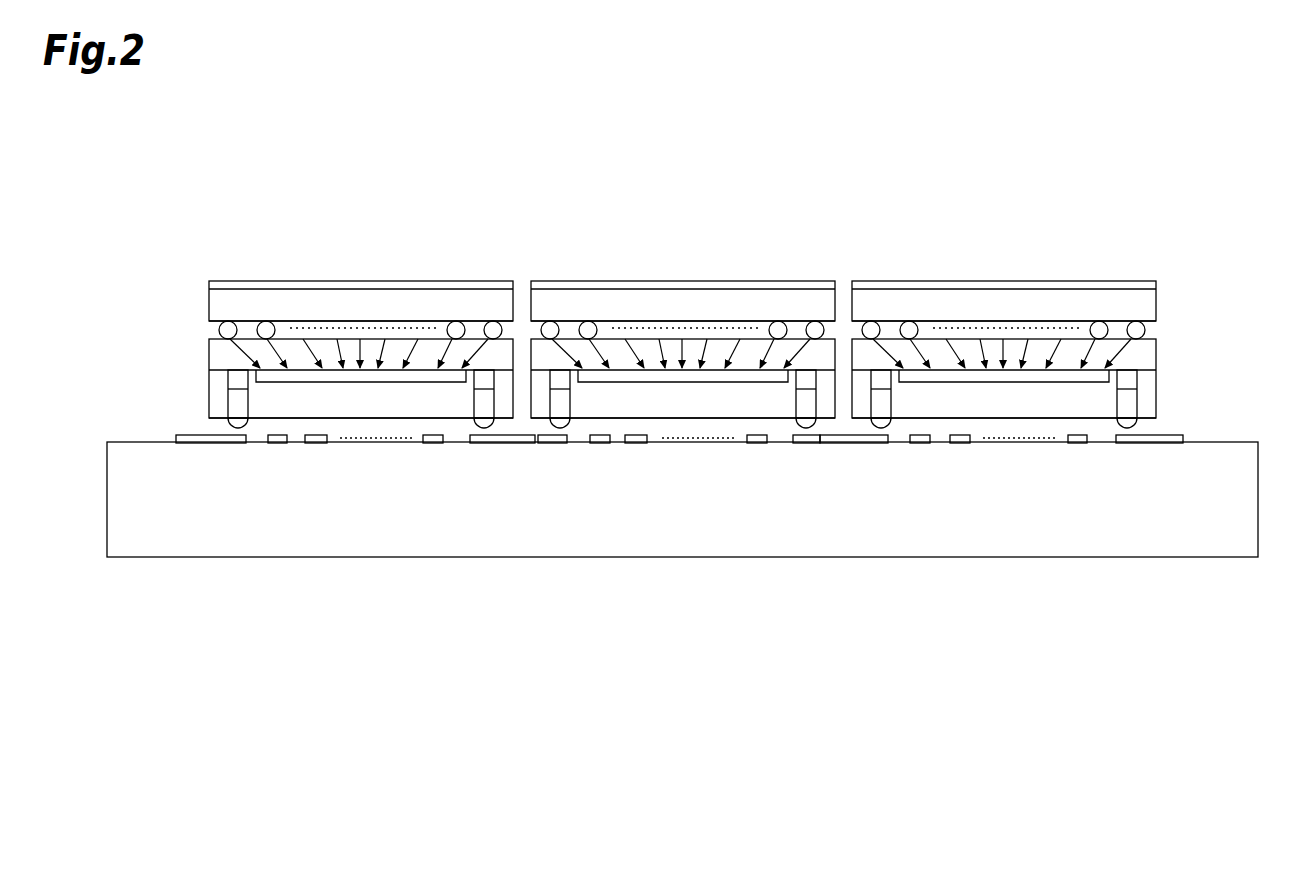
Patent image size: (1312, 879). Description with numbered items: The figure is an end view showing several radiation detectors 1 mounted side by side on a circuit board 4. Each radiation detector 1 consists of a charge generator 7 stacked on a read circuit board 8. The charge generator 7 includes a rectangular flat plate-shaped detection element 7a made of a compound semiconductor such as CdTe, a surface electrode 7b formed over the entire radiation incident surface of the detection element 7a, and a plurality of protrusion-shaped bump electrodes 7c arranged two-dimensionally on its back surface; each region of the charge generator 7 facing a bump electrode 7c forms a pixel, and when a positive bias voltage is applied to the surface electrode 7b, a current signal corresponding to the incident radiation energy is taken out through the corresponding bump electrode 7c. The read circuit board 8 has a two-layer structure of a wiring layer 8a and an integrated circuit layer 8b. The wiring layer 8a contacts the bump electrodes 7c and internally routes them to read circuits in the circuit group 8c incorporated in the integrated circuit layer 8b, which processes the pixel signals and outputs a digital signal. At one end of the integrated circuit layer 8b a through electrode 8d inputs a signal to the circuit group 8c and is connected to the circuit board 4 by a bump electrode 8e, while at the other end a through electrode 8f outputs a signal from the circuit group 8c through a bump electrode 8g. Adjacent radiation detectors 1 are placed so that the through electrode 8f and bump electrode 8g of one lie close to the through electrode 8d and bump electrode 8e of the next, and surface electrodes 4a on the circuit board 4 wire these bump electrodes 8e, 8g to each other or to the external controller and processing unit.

The radiation detector 1 is at (394, 274).
The circuit board 4 is at (1247, 502).
The surface electrode 4a is at (200, 443).
The charge generator 7 is at (210, 302).
The detection element 7a is at (208, 310).
The surface electrode 7b is at (233, 285).
The bump electrode 7c is at (229, 322).
The read circuit board 8 is at (210, 380).
The wiring layer 8a is at (210, 355).
The integrated circuit layer 8b is at (212, 405).
The circuit group 8c is at (325, 372).
The through electrode 8d is at (241, 403).
The bump electrode 8e is at (238, 429).
The through electrode 8f is at (473, 400).
The bump electrode 8g is at (484, 429).